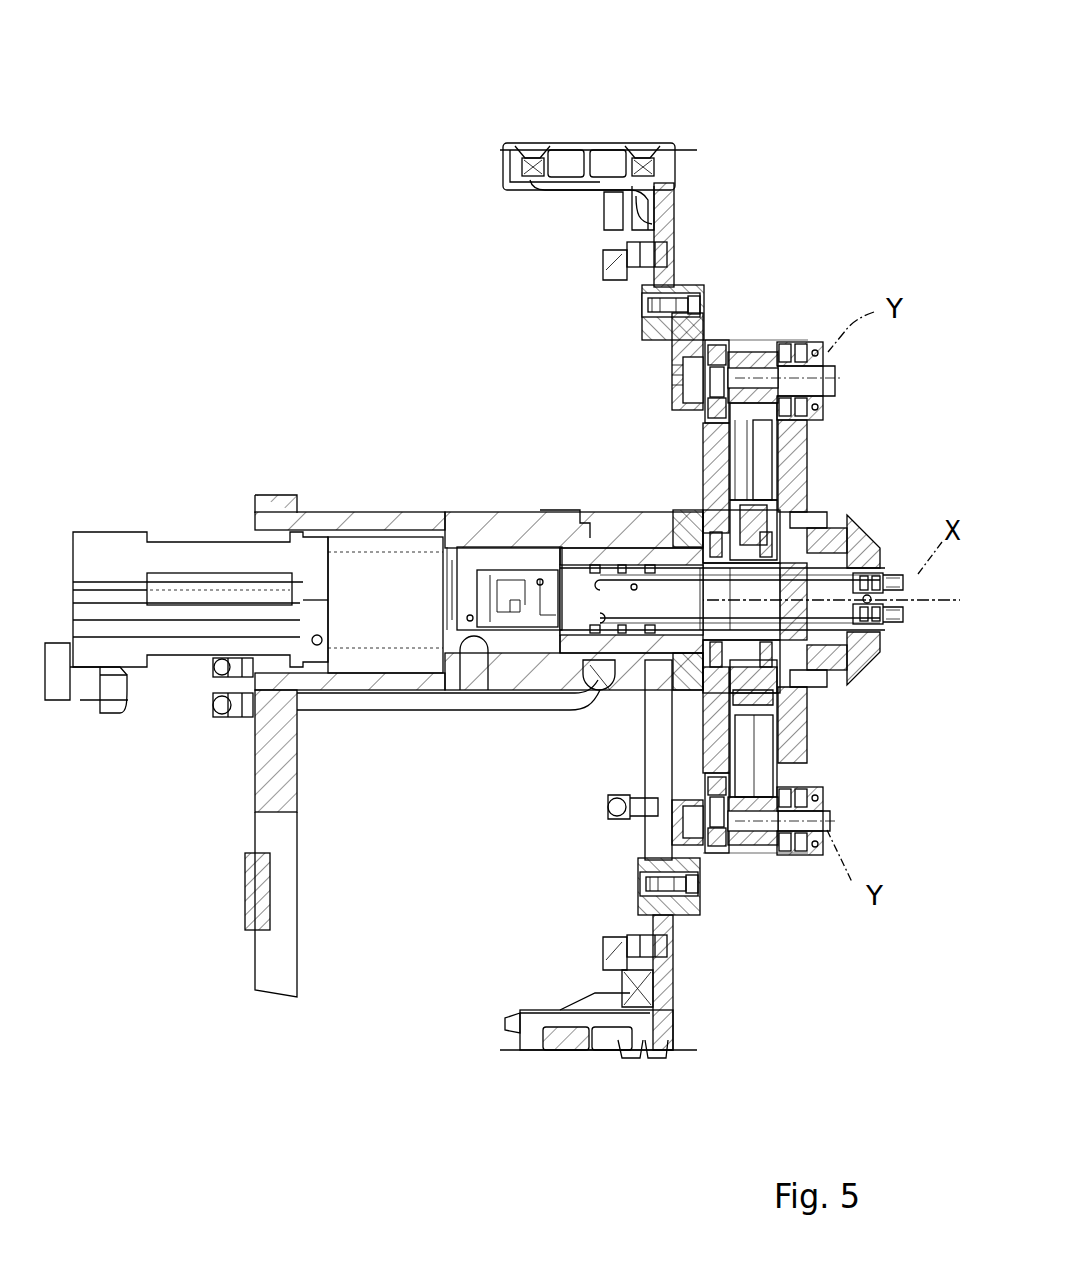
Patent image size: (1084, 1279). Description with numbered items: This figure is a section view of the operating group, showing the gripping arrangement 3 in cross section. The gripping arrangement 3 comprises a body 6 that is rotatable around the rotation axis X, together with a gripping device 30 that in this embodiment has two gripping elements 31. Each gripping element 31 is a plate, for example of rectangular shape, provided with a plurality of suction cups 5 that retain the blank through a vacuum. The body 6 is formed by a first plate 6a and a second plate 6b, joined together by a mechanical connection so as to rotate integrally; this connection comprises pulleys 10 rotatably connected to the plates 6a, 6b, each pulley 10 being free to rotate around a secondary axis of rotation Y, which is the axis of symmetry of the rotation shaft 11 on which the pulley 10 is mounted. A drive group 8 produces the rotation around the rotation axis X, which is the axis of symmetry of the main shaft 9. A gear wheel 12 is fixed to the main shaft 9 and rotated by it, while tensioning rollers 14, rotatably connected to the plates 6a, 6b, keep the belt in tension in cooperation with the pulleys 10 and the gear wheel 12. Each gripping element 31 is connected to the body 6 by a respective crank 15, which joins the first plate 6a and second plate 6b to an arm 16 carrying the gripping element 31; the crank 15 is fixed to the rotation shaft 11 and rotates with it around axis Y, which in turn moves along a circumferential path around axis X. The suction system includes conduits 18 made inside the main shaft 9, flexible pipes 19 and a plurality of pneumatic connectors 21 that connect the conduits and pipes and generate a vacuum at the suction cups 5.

The gripping arrangement 3 is at (470, 214).
The gripping device 30 is at (468, 216).
The gripping element 31 is at (605, 134).
The suction cups 5 is at (520, 148).
The body 6 is at (824, 292).
The first plate 6a is at (712, 453).
The second plate 6b is at (805, 447).
The drive group 8 is at (204, 560).
The main shaft 9 is at (604, 602).
The pulleys 10 is at (766, 341).
The rotation shaft 11 is at (700, 366).
The gear wheel 12 is at (802, 664).
The tensioning rollers 14 is at (766, 768).
The crank 15 is at (648, 318).
The arm 16 is at (690, 225).
The conduits 18 is at (838, 582).
The flexible pipes 19 is at (397, 705).
The pneumatic connectors 21 is at (603, 262).